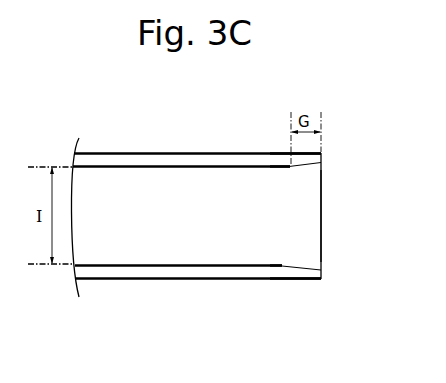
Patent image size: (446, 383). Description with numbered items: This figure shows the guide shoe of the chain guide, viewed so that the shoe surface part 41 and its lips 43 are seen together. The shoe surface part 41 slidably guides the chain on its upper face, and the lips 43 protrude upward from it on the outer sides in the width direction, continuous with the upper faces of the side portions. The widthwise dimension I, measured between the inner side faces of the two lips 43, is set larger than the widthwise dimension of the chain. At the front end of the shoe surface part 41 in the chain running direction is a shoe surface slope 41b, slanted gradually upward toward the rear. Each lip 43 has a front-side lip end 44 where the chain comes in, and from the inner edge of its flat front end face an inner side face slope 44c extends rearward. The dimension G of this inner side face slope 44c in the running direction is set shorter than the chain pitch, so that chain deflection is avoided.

The shoe surface part 41 is at (180, 235).
The shoe surface slope 41b is at (310, 216).
The lip 43 is at (122, 162).
The front-side lip end 44 is at (275, 152).
The inner side face slope 44c is at (305, 168).